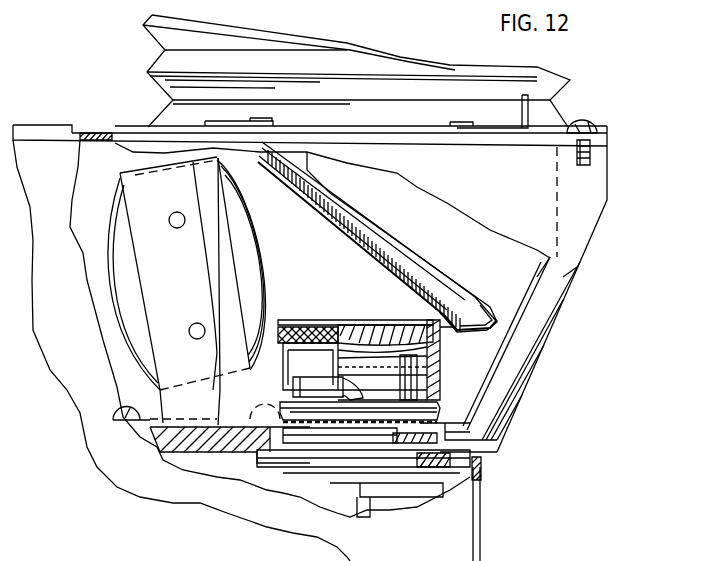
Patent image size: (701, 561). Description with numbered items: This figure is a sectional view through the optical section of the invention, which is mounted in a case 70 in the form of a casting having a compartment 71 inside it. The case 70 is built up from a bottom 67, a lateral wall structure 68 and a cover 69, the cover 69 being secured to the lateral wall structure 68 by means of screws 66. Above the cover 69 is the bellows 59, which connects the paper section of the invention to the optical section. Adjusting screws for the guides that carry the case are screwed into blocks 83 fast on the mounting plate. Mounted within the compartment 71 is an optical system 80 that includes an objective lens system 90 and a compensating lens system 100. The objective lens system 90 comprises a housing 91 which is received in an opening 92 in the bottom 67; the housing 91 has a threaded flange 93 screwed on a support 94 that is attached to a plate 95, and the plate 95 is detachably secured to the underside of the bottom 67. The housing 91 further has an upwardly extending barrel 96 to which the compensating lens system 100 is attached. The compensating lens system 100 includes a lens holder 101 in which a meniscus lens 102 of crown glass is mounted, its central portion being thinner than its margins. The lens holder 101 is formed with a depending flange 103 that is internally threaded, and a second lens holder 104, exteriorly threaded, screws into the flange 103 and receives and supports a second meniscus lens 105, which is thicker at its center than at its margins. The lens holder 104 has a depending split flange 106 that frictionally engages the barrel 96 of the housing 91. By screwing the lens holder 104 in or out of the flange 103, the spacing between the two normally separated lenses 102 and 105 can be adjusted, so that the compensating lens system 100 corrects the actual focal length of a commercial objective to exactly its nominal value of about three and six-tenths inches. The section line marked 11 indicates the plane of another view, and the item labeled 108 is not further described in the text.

The bellows 59 is at (165, 65).
The screws 66 is at (588, 125).
The cover 69 is at (490, 140).
The case 70 is at (608, 202).
The lateral wall structure 68 is at (547, 293).
The compartment 71 is at (493, 363).
The meniscus lens 105 is at (417, 307).
The lens holder 101 is at (468, 320).
The meniscus lens 102 is at (342, 322).
The optical system 80 is at (295, 318).
The compensating lens system 100 is at (395, 335).
The depending flange 103 is at (445, 347).
The lens holder 104 is at (427, 384).
The split flange 106 is at (303, 383).
The barrel 96 is at (423, 393).
The housing 91 is at (313, 430).
The objective lens system 90 is at (385, 433).
The support 94 is at (420, 433).
The opening 92 is at (445, 440).
The threaded flange 93 is at (455, 450).
The plate 95 is at (478, 468).
The bottom 67 is at (222, 437).
The blocks 83 is at (90, 560).
The section line 11 is at (157, 560).
The component 108 is at (193, 556).